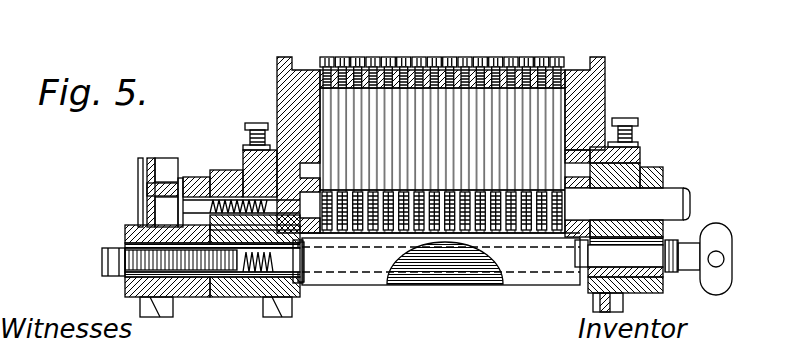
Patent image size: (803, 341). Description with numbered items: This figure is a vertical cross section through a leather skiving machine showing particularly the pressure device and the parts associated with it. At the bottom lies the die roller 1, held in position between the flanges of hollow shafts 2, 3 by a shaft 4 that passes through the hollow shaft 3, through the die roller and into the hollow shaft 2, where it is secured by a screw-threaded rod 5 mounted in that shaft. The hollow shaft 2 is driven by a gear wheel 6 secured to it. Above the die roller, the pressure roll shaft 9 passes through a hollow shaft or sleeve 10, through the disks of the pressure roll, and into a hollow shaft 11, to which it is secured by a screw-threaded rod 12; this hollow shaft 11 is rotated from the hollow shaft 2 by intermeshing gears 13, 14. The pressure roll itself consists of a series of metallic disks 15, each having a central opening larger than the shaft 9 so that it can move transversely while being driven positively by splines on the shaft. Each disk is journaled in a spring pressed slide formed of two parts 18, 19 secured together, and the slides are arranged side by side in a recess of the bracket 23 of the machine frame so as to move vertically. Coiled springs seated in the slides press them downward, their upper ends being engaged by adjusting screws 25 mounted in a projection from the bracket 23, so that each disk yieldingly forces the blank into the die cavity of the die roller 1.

The die roller 1 is at (358, 281).
The hollow shaft 2 is at (222, 273).
The hollow shaft 3 is at (667, 235).
The shaft 4 is at (608, 257).
The screw-threaded rod 5 is at (122, 258).
The gear wheel 6 is at (138, 157).
The pressure roll shaft 9 is at (664, 200).
The hollow shaft or sleeve 10 is at (641, 182).
The hollow shaft 11 is at (222, 183).
The screw-threaded rod 12 is at (194, 178).
The gear 13 is at (200, 281).
The gear 14 is at (182, 178).
The metallic disks 15 is at (517, 238).
The slide part 18 is at (483, 100).
The slide part 19 is at (512, 78).
The bracket 23 is at (288, 87).
The adjusting screws 25 is at (340, 63).